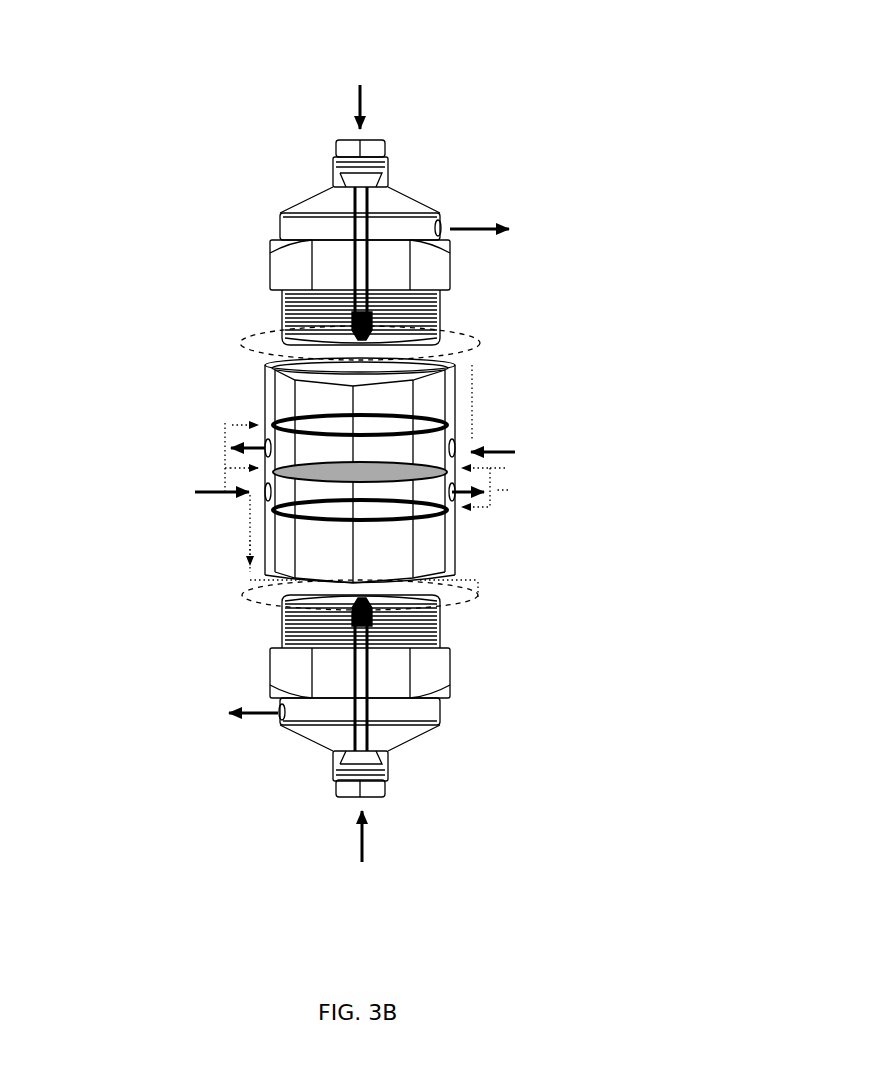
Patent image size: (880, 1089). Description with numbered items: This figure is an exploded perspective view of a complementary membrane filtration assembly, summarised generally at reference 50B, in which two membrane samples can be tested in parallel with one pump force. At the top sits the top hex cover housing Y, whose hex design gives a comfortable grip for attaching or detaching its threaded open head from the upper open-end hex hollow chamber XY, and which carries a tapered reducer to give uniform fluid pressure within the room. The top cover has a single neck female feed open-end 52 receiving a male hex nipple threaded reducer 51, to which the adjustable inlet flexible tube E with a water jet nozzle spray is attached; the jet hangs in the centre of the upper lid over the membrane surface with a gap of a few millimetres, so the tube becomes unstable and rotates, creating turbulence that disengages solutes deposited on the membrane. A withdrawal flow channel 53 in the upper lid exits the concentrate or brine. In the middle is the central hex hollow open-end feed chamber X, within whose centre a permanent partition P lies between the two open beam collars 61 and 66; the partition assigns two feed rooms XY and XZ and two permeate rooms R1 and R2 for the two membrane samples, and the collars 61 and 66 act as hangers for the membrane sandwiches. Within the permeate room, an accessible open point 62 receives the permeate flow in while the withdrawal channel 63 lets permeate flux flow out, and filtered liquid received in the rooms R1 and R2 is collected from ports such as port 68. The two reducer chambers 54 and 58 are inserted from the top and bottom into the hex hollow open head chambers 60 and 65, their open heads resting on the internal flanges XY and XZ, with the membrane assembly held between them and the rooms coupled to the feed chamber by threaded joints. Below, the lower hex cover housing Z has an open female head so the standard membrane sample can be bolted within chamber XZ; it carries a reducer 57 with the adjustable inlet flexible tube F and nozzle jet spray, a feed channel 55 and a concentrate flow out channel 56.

The complementary filtration assembly 50B is at (558, 92).
The male hex nipple threaded reducer 51 is at (363, 140).
The neck female feed open-end 52 is at (390, 178).
The withdrawal flow channel 53 is at (447, 232).
The reducer chamber 54 is at (287, 317).
The feed fluid channel 55 is at (340, 752).
The concentrate flow out channel 56 is at (280, 713).
The reducer 57 is at (360, 802).
The reducer chamber 58 is at (442, 622).
The hex hollow open head chamber 60 is at (450, 351).
The open beam collar 61 is at (452, 397).
The accessible open point 62 is at (462, 443).
The withdrawal channel 63 is at (238, 424).
The hex hollow open head chamber 65 is at (442, 592).
The open beam collar 66 is at (450, 536).
The port 68 is at (490, 467).
The adjustable inlet flexible tube E is at (352, 263).
The adjustable inlet flexible tube F is at (350, 673).
The central hex hollow open-end feed chamber X is at (218, 384).
The top hex cover housing Y is at (460, 185).
The lower hex cover housing Z is at (488, 734).
The upper open-end hex hollow chamber XY is at (486, 381).
The hollow chamber XZ is at (240, 549).
The permeate room R1 is at (203, 447).
The permeate room R2 is at (515, 493).
The permanent partition P is at (233, 484).